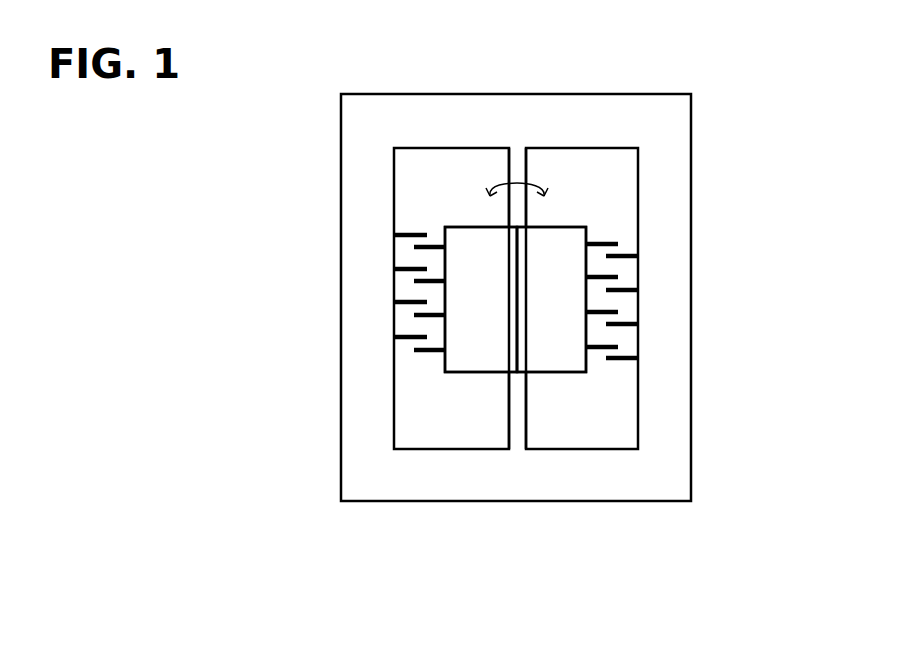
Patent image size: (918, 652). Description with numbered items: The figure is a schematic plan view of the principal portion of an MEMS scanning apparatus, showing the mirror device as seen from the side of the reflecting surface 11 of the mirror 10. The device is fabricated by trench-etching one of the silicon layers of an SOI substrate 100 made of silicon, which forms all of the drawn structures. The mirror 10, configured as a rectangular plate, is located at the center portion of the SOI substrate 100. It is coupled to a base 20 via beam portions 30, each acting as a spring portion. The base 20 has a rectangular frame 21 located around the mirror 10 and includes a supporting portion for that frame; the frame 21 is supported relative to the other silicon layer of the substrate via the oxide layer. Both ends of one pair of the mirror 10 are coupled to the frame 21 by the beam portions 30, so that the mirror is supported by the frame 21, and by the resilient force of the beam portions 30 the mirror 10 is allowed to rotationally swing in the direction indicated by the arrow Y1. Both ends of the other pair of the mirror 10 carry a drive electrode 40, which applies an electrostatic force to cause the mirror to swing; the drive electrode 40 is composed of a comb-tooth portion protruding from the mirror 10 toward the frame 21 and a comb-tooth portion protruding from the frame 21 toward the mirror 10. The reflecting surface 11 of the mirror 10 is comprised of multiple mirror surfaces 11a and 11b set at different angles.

The SOI substrate 100 is at (694, 361).
The base 20 is at (670, 418).
The frame 21 is at (668, 448).
The beam portions 30 is at (527, 168).
The mirror 10 is at (474, 240).
The reflecting surface 11 is at (347, 530).
The mirror surface 11a is at (475, 362).
The mirror surface 11b is at (548, 356).
The drive electrode 40 is at (427, 350).
The arrow Y1 is at (532, 192).